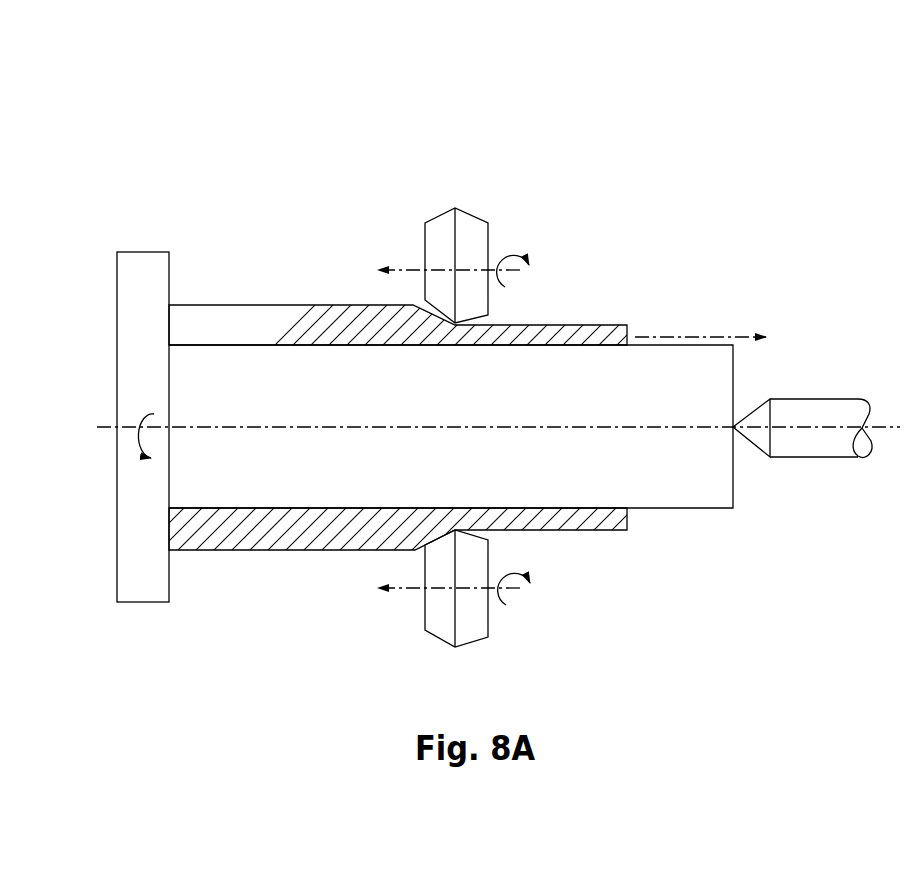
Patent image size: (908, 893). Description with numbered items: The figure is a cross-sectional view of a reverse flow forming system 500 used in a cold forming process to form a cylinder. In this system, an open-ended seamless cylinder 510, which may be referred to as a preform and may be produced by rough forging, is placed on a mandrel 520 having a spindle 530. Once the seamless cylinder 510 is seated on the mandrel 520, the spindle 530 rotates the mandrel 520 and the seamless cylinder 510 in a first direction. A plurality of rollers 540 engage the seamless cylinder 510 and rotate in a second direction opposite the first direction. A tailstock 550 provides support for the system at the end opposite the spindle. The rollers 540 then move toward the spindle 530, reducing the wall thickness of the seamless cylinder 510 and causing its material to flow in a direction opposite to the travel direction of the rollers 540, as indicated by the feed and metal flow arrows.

The reverse flow forming system 500 is at (230, 95).
The seamless cylinder 510 is at (298, 530).
The mandrel 520 is at (708, 480).
The spindle 530 is at (148, 577).
The rollers 540 is at (498, 230).
The tailstock 550 is at (830, 438).